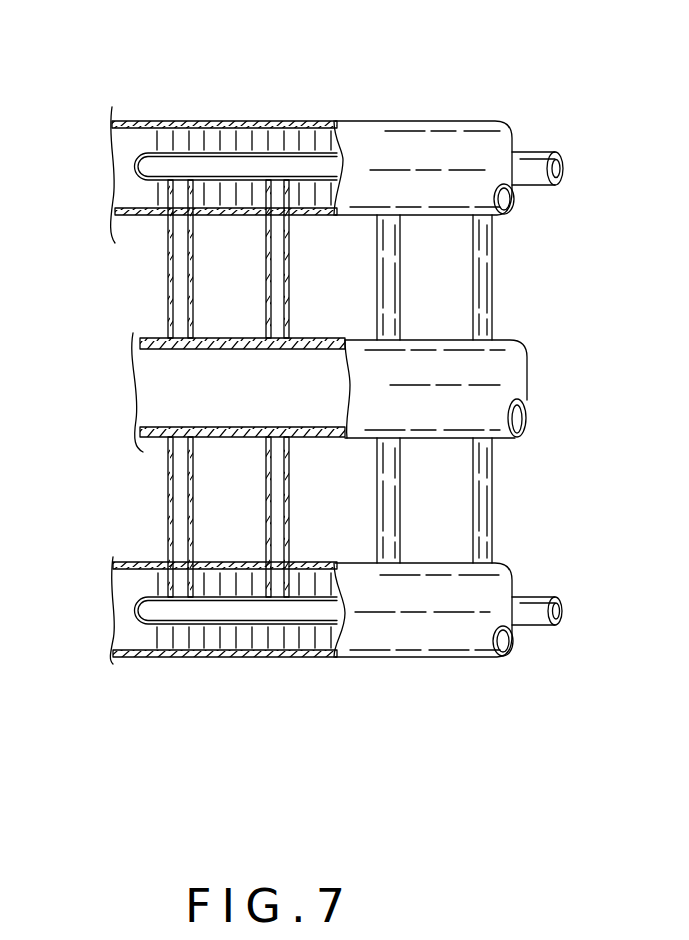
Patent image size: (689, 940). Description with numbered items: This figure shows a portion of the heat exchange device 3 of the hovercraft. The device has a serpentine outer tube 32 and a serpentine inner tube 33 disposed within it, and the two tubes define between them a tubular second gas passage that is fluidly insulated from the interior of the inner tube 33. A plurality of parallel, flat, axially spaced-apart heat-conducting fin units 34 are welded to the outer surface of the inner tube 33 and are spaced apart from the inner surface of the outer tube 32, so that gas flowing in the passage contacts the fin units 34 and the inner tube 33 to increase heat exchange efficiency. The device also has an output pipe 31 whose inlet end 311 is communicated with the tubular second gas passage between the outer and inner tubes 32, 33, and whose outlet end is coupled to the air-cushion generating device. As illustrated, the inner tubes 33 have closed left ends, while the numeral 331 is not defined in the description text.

The heat exchange device 3 is at (410, 97).
The output pipe 31 is at (510, 365).
The inlet end 311 is at (168, 288).
The serpentine outer tube 32 is at (322, 120).
The serpentine inner tube 33 is at (273, 152).
The fin root 331 is at (210, 160).
The heat-conducting fin unit 34 is at (157, 141).